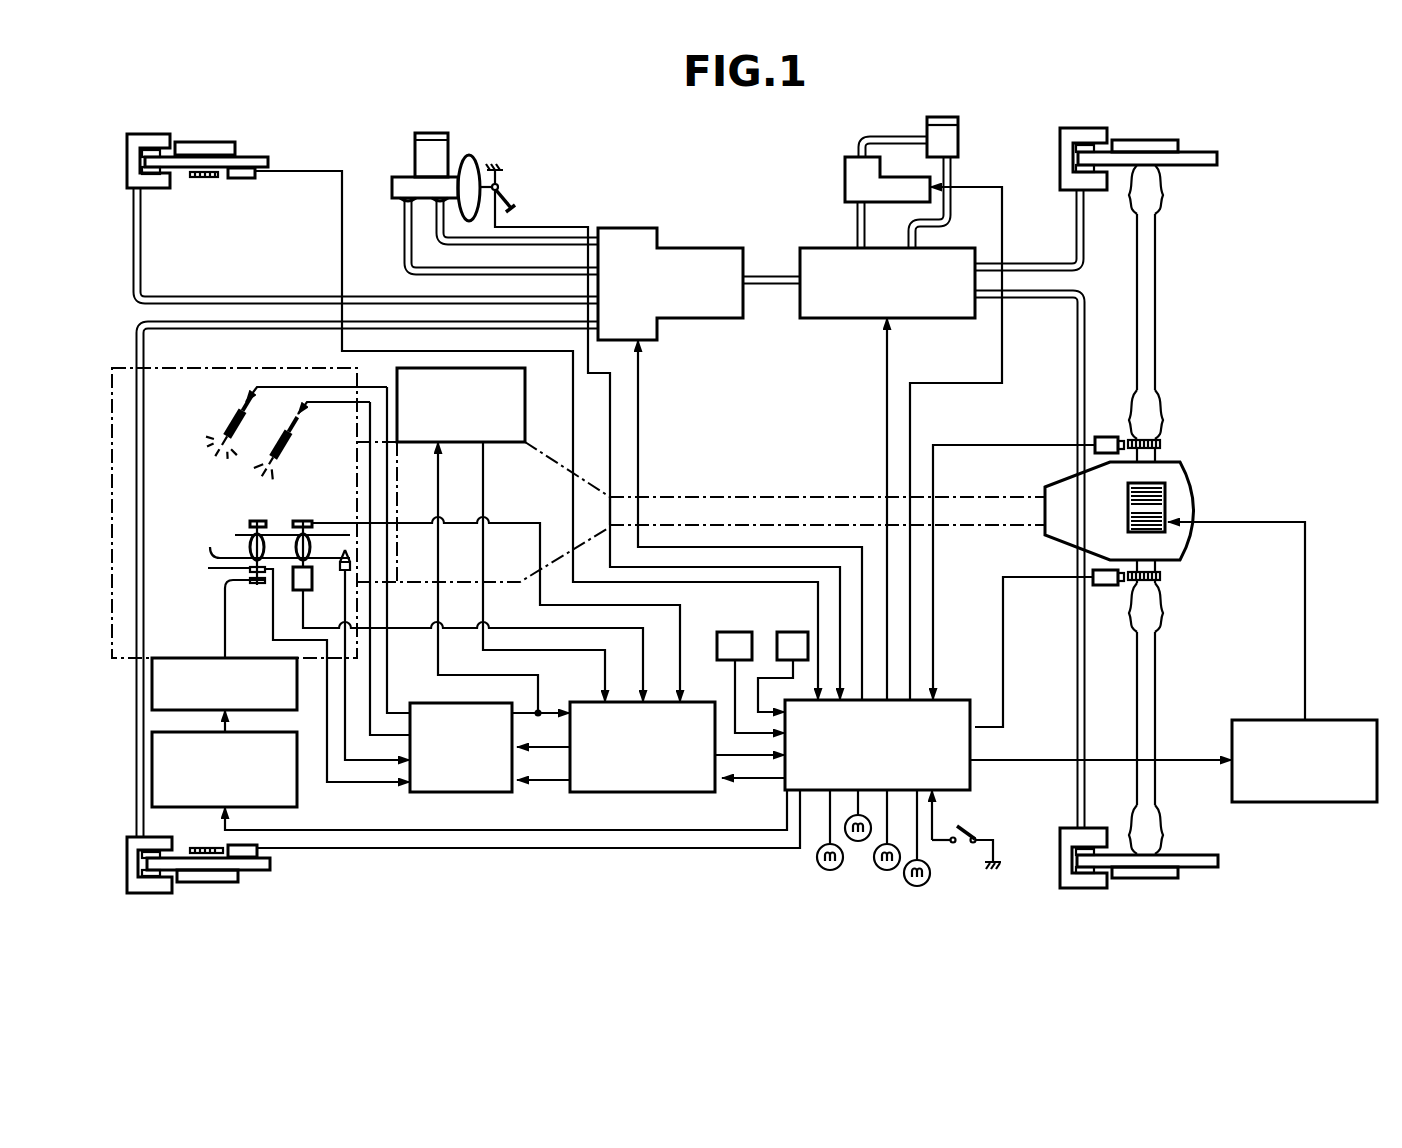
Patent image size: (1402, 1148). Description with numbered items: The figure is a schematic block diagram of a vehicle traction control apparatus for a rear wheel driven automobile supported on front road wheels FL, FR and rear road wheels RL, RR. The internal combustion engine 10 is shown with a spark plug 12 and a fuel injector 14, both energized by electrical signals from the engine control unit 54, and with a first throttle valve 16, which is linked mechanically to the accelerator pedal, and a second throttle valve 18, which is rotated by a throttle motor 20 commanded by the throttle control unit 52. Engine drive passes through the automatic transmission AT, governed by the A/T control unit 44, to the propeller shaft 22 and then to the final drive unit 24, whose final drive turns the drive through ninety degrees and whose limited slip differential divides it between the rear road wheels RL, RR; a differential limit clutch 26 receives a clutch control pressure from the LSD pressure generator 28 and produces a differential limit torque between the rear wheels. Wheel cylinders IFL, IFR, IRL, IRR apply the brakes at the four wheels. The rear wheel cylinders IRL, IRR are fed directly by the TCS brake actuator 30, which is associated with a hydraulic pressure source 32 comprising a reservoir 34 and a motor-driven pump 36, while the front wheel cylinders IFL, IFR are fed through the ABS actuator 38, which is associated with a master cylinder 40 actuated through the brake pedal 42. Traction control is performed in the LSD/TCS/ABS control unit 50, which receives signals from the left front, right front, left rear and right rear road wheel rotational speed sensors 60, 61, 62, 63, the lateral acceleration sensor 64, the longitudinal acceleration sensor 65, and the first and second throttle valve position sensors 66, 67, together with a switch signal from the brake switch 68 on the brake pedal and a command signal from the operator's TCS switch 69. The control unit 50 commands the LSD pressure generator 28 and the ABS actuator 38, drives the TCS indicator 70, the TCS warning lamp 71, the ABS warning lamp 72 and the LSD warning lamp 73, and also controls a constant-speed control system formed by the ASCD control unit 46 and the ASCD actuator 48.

The internal combustion engine 10 is at (234, 494).
The spark plug 12 is at (228, 422).
The fuel injector 14 is at (296, 440).
The first throttle valve 16 is at (250, 545).
The second throttle valve 18 is at (312, 543).
The throttle motor 20 is at (312, 580).
The propeller shaft 22 is at (752, 497).
The final drive unit 24 is at (1198, 505).
The differential limit clutch 26 is at (1168, 492).
The LSD pressure generator 28 is at (1348, 720).
The TCS brake actuator 30 is at (828, 320).
The hydraulic pressure source 32 is at (860, 115).
The reservoir 34 is at (958, 128).
The motor-driven pump 36 is at (845, 168).
The ABS actuator 38 is at (625, 228).
The master cylinder 40 is at (448, 140).
The brake pedal 42 is at (515, 203).
The A/T control unit 44 is at (525, 405).
The ASCD control unit 46 is at (298, 786).
The ASCD actuator 48 is at (177, 658).
The LSD/TCS/ABS control unit 50 is at (952, 700).
The throttle control unit 52 is at (630, 795).
The engine control unit 54 is at (448, 795).
The left front road wheel rotational speed sensor 60 is at (250, 858).
The right front road wheel rotational speed sensor 61 is at (250, 180).
The left rear road wheel rotational speed sensor 62 is at (1102, 585).
The right rear road wheel rotational speed sensor 63 is at (1105, 437).
The lateral acceleration sensor 64 is at (725, 632).
The longitudinal acceleration sensor 65 is at (790, 632).
The first throttle valve position sensor 66 is at (253, 520).
The second throttle valve position sensor 67 is at (300, 520).
The brake switch 68 is at (502, 186).
The TCS switch 69 is at (968, 825).
The TCS indicator 70 is at (930, 878).
The TCS warning lamp 71 is at (887, 870).
The ABS warning lamp 72 is at (858, 841).
The LSD warning lamp 73 is at (818, 862).
The wheel cylinder IFR is at (140, 134).
The right front road wheel FR is at (213, 142).
The wheel cylinder IFL is at (138, 893).
The left front road wheel FL is at (213, 882).
The wheel cylinder IRR is at (1060, 160).
The right rear road wheel RR is at (1157, 140).
The wheel cylinder IRL is at (1062, 870).
The left rear road wheel RL is at (1140, 878).
The automatic transmission AT is at (515, 575).